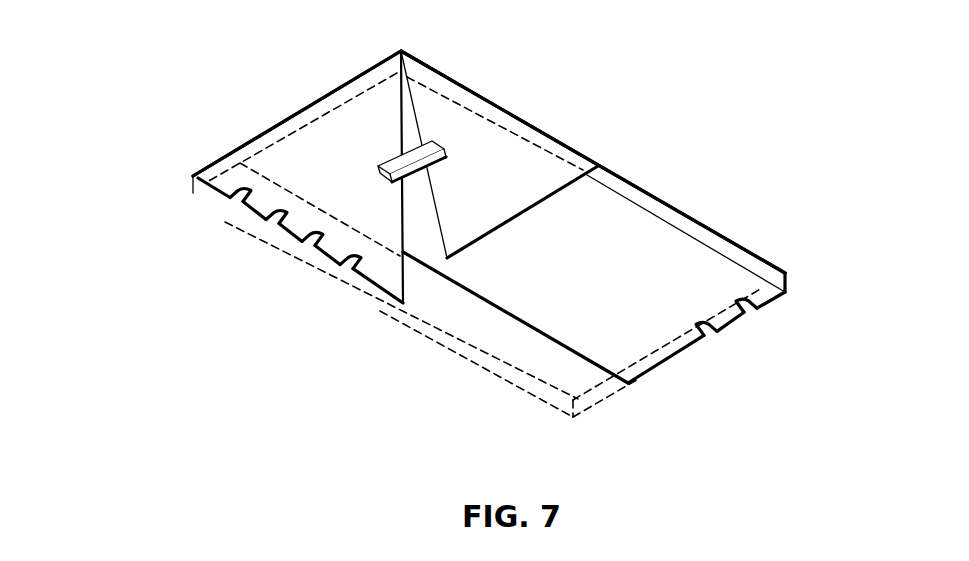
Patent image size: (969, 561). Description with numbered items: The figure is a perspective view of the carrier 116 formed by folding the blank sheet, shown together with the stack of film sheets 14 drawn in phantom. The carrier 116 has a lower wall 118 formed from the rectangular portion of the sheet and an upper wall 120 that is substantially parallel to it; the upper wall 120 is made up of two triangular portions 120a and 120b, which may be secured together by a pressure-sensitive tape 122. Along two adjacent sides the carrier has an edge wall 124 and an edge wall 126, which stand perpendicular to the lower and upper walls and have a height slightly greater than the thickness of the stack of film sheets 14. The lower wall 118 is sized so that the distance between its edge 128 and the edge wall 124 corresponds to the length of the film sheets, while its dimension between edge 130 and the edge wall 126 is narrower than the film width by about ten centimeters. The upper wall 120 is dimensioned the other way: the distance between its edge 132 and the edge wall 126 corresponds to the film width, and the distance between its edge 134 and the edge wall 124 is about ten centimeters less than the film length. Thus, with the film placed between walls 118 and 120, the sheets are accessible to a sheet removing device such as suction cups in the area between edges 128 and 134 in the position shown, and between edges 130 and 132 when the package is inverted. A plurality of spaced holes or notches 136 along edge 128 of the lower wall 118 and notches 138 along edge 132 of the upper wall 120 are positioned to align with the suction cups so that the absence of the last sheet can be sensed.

The stack of film sheets 14 is at (463, 357).
The carrier 116 is at (652, 129).
The lower wall 118 is at (590, 262).
The upper wall 120 is at (510, 146).
The triangular portion of upper wall 120a is at (337, 127).
The triangular portion of upper wall 120b is at (447, 107).
The pressure-sensitive tape 122 is at (445, 151).
The edge wall 124 is at (205, 191).
The edge wall 126 is at (692, 227).
The edge of lower wall 128 is at (670, 362).
The edge of lower wall 130 is at (585, 359).
The edge of upper wall 132 is at (370, 285).
The edge of upper wall 134 is at (480, 239).
The holes or notches 136 is at (748, 306).
The holes or notches 138 is at (347, 264).